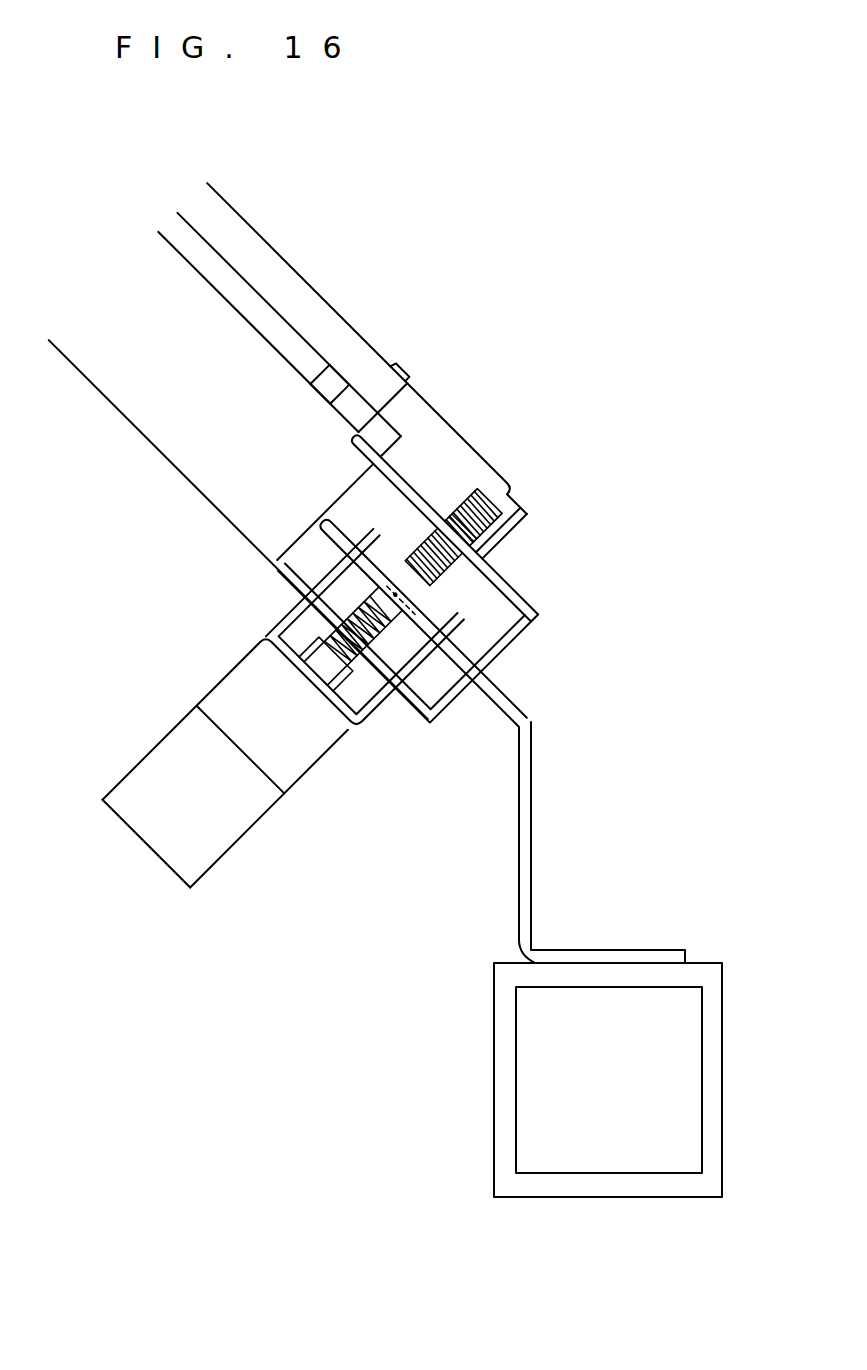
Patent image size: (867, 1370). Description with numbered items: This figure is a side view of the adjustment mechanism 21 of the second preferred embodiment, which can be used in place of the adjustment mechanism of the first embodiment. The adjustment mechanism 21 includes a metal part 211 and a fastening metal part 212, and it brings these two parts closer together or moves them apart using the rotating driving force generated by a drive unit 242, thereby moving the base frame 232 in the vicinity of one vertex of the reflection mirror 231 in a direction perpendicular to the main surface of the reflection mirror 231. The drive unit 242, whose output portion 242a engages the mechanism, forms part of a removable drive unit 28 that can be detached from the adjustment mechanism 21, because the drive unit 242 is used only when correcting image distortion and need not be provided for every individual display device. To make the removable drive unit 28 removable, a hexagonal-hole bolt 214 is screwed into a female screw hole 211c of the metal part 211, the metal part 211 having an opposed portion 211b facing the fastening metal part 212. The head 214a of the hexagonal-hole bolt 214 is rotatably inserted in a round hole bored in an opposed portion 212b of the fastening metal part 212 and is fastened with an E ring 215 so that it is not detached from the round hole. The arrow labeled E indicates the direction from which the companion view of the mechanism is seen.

The adjustment mechanism 21 is at (280, 465).
The removable drive unit 28 is at (130, 700).
The metal part 211 is at (493, 652).
The opposed portion of the metal part 211b is at (375, 463).
The female screw hole 211c is at (497, 573).
The fastening metal part 212 is at (528, 843).
The opposed portion of the fastening metal part 212b is at (322, 525).
The hexagonal-hole bolt 214 is at (440, 605).
The head of the hexagonal-hole bolt 214a is at (402, 622).
The E ring 215 is at (388, 577).
The reflection mirror 231 is at (262, 253).
The base frame 232 is at (125, 385).
The drive unit 242 is at (252, 838).
The output portion of the drive unit 242a is at (473, 495).
The viewing direction E is at (130, 860).